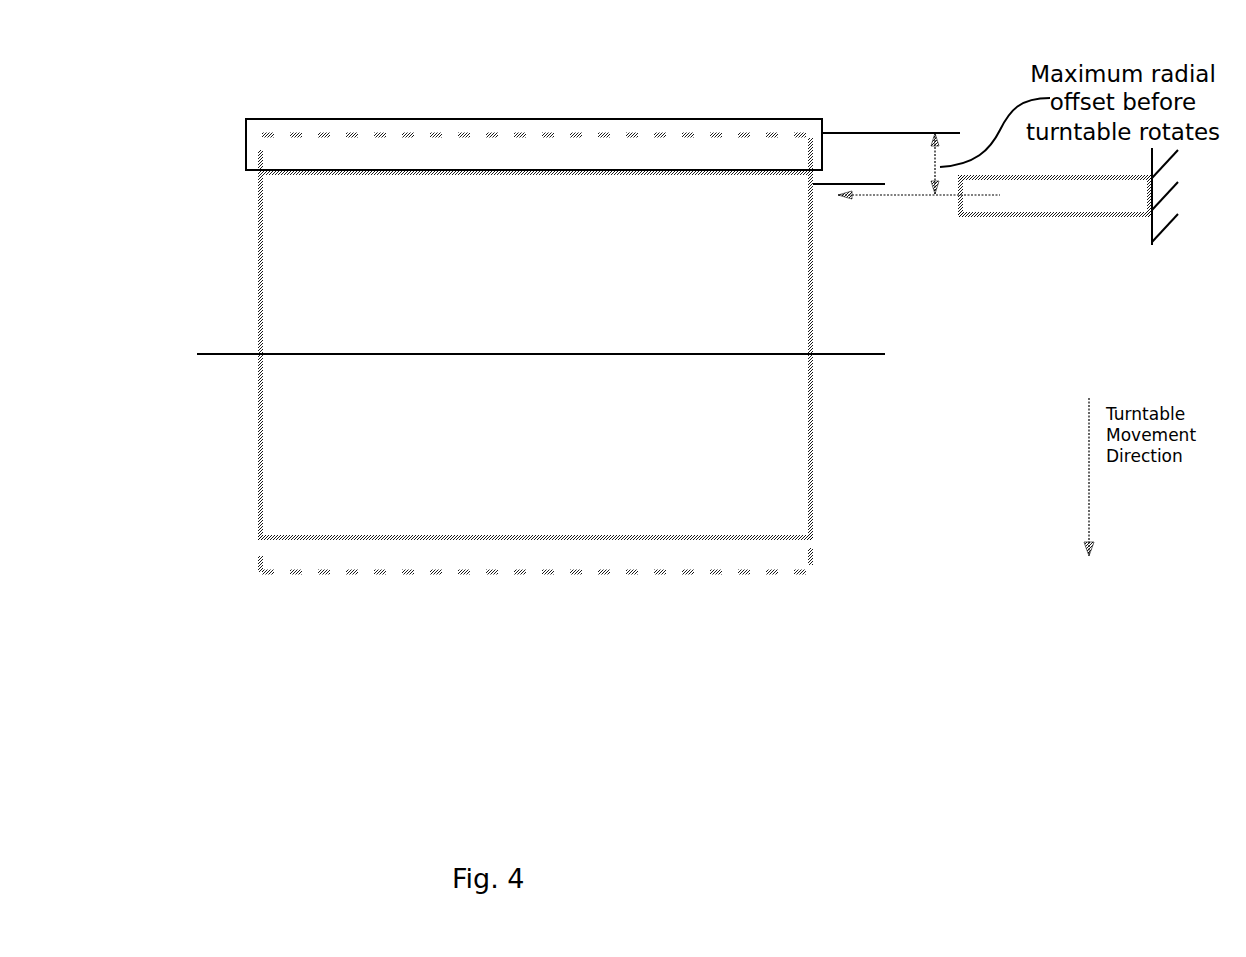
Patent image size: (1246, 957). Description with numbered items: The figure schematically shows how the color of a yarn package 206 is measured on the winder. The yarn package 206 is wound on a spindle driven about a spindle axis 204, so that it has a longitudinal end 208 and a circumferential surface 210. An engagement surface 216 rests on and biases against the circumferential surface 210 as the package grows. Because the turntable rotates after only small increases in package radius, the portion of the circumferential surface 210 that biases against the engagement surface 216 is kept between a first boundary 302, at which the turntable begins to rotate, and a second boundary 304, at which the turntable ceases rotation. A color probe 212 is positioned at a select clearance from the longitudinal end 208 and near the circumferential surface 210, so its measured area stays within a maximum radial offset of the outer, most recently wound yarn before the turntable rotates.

The engagement surface 216 is at (497, 119).
The circumferential surface 210 is at (545, 168).
The longitudinal end 208 is at (812, 289).
The yarn package 206 is at (800, 440).
The spindle axis 204 is at (845, 354).
The color probe 212 is at (1004, 203).
The first boundary 302 is at (845, 133).
The second boundary 304 is at (855, 184).